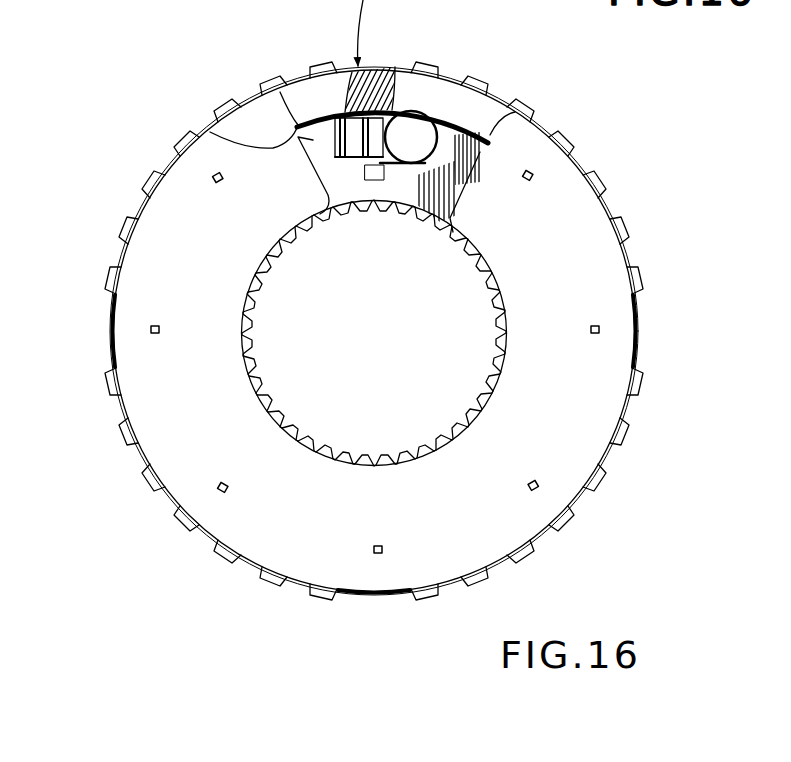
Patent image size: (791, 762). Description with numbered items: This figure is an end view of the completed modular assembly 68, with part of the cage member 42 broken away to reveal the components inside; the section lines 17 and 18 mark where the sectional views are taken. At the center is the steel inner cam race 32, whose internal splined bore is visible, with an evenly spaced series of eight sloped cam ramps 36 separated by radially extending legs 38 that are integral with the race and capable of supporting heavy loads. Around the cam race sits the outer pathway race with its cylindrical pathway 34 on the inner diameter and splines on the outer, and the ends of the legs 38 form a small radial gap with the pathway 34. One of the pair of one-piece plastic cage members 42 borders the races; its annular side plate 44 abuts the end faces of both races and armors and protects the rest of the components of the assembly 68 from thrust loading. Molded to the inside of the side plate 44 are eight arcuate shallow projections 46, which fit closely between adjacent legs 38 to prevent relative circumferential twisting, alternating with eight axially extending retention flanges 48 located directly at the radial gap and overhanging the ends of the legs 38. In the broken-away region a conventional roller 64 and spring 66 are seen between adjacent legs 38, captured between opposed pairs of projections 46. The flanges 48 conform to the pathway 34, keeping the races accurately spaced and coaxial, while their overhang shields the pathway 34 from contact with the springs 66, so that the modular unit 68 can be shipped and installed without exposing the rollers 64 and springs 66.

The section line 17- 17 is at (421, 53).
The section line 18- 18 is at (285, 42).
The inner cam race 32 is at (500, 338).
The cylindrical pathway 34 is at (394, 67).
The sloped cam ramps 36 is at (368, 170).
The radially extending legs 38 is at (212, 133).
The cage member 42 is at (128, 228).
The annular side plate 44 is at (190, 270).
The arcuate shallow projections 46 is at (453, 152).
The retention flanges 48 is at (310, 117).
The roller 64 is at (411, 137).
The spring 66 is at (347, 160).
The modular assembly 68 is at (634, 184).